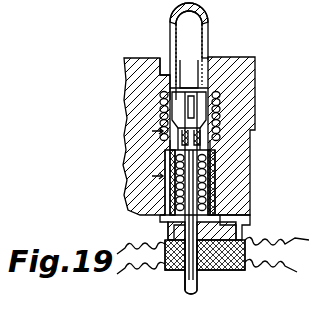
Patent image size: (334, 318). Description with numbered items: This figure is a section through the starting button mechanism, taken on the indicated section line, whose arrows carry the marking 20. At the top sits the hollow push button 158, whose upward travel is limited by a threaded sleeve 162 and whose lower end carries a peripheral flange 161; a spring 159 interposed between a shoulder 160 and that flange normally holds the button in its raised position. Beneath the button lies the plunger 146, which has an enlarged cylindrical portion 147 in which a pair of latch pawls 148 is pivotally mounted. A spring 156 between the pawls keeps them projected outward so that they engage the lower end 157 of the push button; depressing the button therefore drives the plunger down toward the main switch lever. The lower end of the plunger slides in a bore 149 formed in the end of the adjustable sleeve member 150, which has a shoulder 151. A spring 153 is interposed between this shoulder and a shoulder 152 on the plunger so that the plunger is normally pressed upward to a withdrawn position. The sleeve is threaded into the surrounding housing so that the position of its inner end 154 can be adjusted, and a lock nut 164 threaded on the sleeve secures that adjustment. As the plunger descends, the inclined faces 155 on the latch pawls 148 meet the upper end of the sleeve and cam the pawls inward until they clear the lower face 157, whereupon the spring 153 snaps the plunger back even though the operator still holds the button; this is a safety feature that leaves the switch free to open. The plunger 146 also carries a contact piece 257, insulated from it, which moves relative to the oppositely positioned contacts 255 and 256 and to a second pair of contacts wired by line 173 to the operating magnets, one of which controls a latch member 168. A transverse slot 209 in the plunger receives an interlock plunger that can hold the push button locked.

The plunger 146 is at (200, 292).
The enlarged cylindrical portion 147 is at (170, 58).
The latch pawls 148 is at (262, 115).
The bore 149 is at (240, 218).
The adjustable sleeve member 150 is at (238, 230).
The shoulder 151 is at (165, 210).
The shoulder 152 is at (252, 147).
The spring 153 is at (248, 172).
The inner end 154 is at (135, 150).
The inclined faces 155 is at (135, 128).
The spring 156 is at (182, 75).
The lower end 157 is at (257, 78).
The hollow push button 158 is at (208, 20).
The spring 159 is at (135, 100).
The shoulder 160 is at (250, 132).
The peripheral flange 161 is at (255, 58).
The threaded sleeve 162 is at (206, 56).
The lock nut 164 is at (168, 222).
The latch member 168 is at (255, 100).
The line 173 is at (280, 245).
The transverse slot 209 is at (135, 176).
The contact 255 is at (255, 276).
The contact 256 is at (165, 275).
The contact piece 257 is at (186, 283).
The section line 20 is at (151, 154).